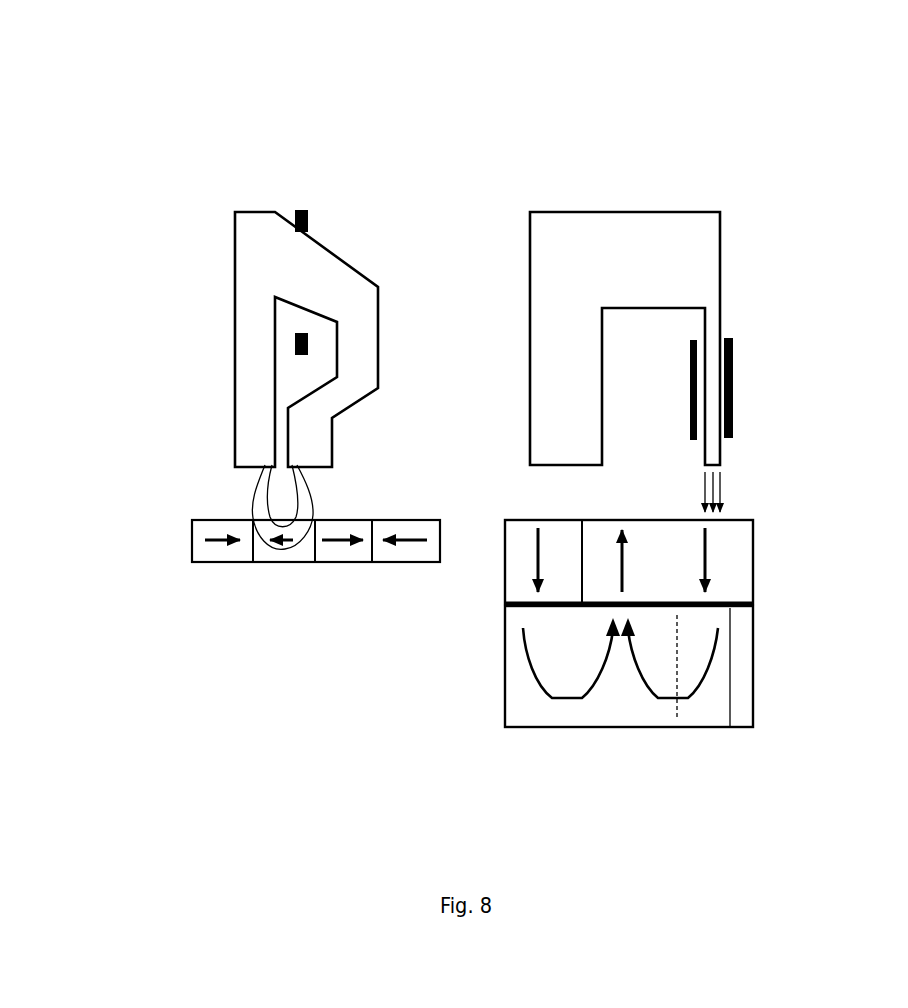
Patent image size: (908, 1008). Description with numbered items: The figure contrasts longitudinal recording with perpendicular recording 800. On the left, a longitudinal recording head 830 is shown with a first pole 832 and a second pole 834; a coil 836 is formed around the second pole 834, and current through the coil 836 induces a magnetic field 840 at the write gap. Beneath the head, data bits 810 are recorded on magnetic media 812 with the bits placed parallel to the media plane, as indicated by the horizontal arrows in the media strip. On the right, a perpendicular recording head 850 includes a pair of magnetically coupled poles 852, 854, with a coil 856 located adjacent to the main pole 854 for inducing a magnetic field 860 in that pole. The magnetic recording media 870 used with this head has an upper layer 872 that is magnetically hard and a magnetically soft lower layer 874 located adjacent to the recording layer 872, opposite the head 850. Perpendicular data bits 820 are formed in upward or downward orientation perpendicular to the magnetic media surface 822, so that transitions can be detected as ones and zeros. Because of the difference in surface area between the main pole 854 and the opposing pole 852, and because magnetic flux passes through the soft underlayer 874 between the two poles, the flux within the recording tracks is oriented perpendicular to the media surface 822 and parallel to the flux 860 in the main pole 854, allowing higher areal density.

The differences between longitudinal recording and perpendicular recording 800 is at (112, 82).
The data bits 810 is at (203, 556).
The magnetic media 812 is at (340, 520).
The data bits 820 is at (522, 535).
The magnetic media surface 822 is at (615, 517).
The longitudinal recording head 830 is at (238, 147).
The first pole 832 is at (236, 367).
The second pole 834 is at (379, 356).
The coil 836 is at (324, 233).
The magnetic field 840 is at (242, 500).
The perpendicular recording head 850 is at (693, 155).
The opposing pole 852 is at (600, 402).
The main pole 854 is at (720, 450).
The coil 856 is at (752, 352).
The magnetic field 860 is at (727, 495).
The magnetic recording media 870 is at (480, 632).
The upper layer 872 is at (752, 568).
The lower layer 874 is at (755, 645).